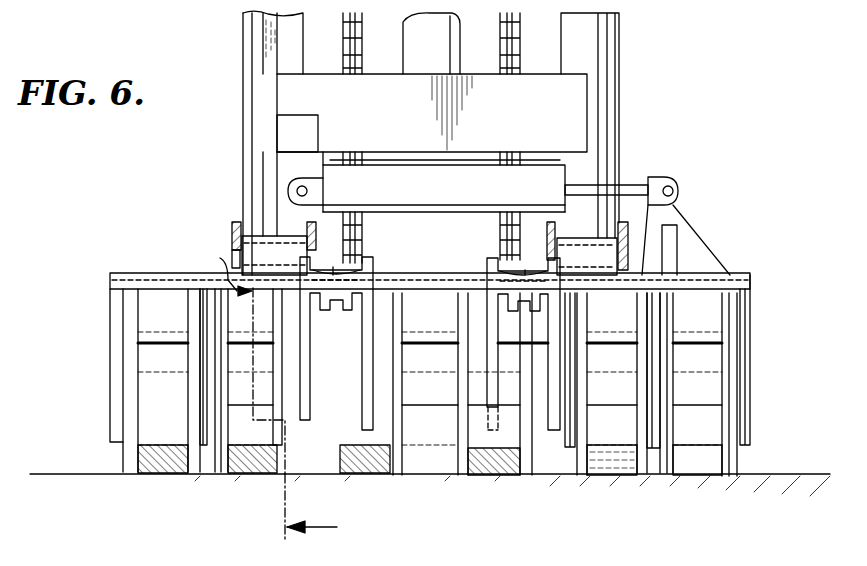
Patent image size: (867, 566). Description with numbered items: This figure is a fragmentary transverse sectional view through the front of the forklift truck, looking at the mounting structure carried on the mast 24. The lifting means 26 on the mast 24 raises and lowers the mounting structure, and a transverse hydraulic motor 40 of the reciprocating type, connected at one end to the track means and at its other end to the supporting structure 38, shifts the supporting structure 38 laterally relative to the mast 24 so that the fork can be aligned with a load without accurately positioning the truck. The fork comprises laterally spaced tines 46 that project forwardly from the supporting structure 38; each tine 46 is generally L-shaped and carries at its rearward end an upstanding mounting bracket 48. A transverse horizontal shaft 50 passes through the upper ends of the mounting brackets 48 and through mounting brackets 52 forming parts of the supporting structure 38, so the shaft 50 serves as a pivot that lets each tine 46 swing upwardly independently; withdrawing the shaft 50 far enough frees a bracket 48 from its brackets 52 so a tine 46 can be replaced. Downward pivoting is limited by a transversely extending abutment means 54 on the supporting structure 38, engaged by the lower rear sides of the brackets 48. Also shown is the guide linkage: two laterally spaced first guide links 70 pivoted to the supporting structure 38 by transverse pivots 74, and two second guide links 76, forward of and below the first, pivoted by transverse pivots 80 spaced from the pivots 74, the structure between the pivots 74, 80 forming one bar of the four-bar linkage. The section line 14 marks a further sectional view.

The section line 14- 14 is at (258, 400).
The mast 24 is at (618, 68).
The lifting means 26 is at (522, 52).
The supporting structure 38 is at (730, 274).
The transverse hydraulic motor 40 is at (483, 188).
The tines 46 is at (160, 465).
The mounting brackets 48 is at (128, 423).
The transverse horizontal shaft 50 is at (745, 312).
The mounting brackets 52 is at (113, 398).
The abutment means 54 is at (418, 425).
The first guide links 70 is at (232, 226).
The transverse pivots 74 is at (260, 240).
The second guide links 76 is at (355, 270).
The transverse pivots 80 is at (333, 267).